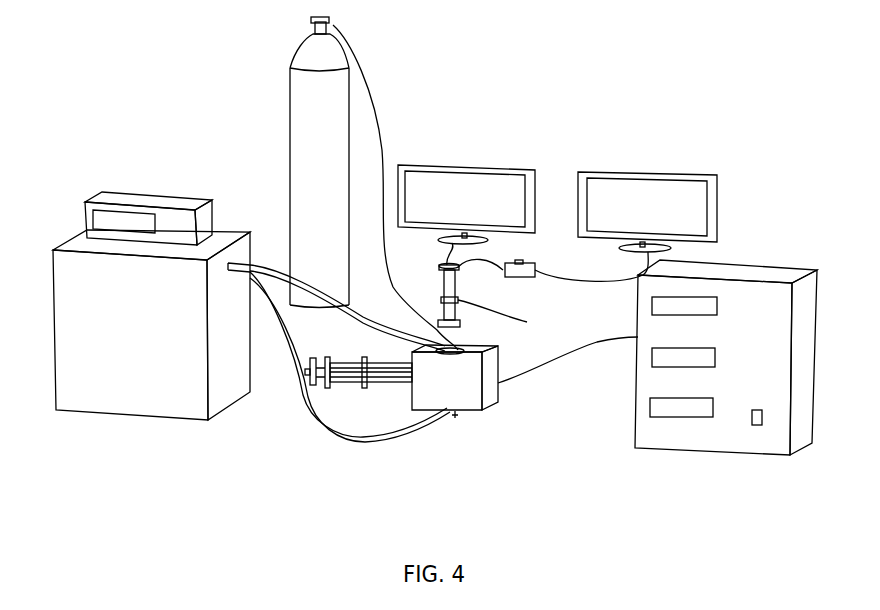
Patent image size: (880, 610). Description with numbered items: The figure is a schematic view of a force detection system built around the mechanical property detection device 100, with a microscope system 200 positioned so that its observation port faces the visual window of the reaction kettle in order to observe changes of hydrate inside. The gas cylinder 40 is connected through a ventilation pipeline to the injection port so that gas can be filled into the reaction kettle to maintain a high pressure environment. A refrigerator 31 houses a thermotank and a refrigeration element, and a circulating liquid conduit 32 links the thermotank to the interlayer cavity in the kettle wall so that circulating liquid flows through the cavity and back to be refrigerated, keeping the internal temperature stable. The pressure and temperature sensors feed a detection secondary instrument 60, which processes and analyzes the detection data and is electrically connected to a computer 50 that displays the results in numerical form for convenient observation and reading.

The refrigerator 31 is at (158, 392).
The circulating liquid conduit 32 is at (288, 403).
The gas cylinder 40 is at (313, 135).
The computer 50 is at (483, 182).
The detection secondary instrument 60 is at (677, 432).
The mechanical property detection device 100 is at (395, 402).
The microscope system 200 is at (507, 277).